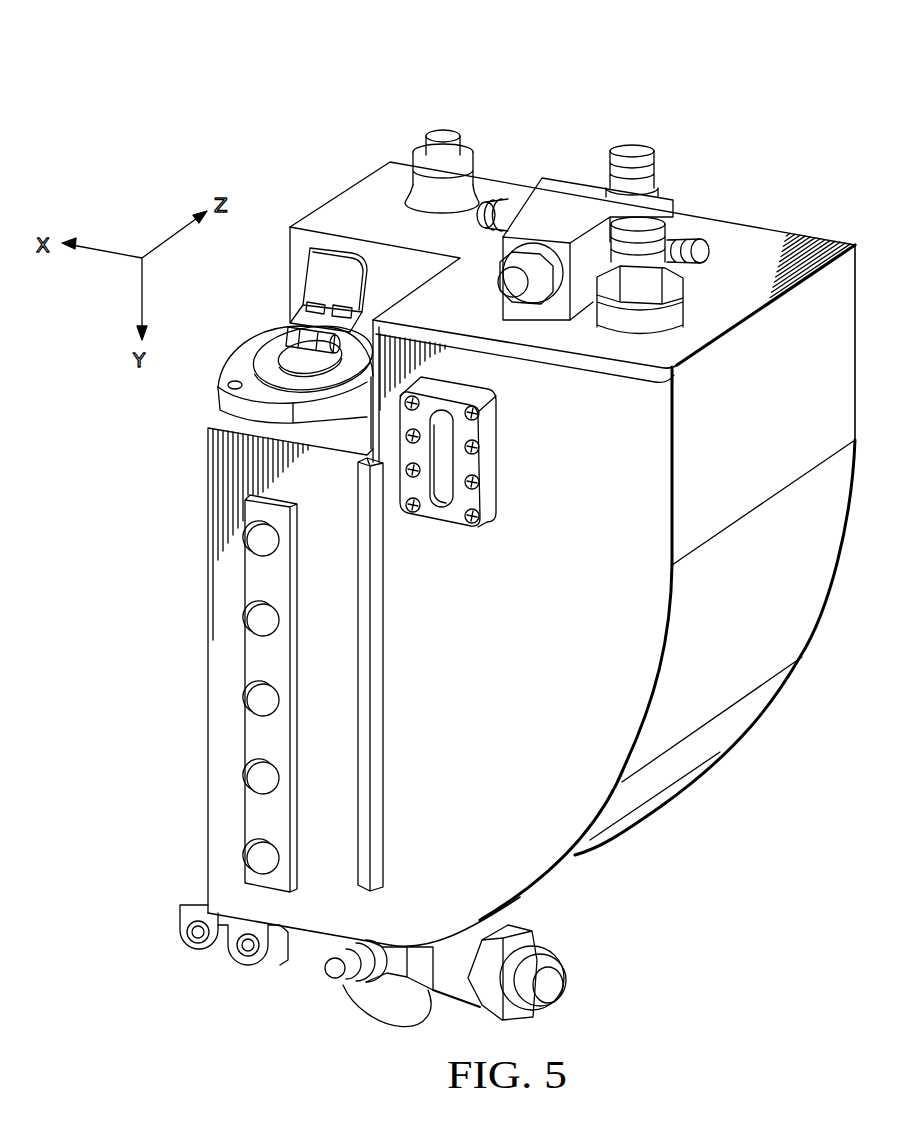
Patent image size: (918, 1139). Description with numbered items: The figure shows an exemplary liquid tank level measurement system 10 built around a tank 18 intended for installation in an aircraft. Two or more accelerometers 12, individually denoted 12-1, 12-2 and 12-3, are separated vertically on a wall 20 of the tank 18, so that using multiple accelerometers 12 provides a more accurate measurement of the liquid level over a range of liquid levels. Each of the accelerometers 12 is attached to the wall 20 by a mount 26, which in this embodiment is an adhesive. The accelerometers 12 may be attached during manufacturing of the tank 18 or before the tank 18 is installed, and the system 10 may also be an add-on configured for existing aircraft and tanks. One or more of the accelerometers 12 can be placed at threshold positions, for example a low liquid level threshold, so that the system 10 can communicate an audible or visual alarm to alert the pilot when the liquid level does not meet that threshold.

The liquid tank level measurement system 10 is at (785, 79).
The accelerometers 12 is at (230, 734).
The accelerometer 12-1 is at (262, 545).
The accelerometer 12-2 is at (262, 625).
The accelerometer 12-3 is at (262, 705).
The tank 18 is at (757, 236).
The wall 20 is at (567, 822).
The mount 26 is at (262, 825).